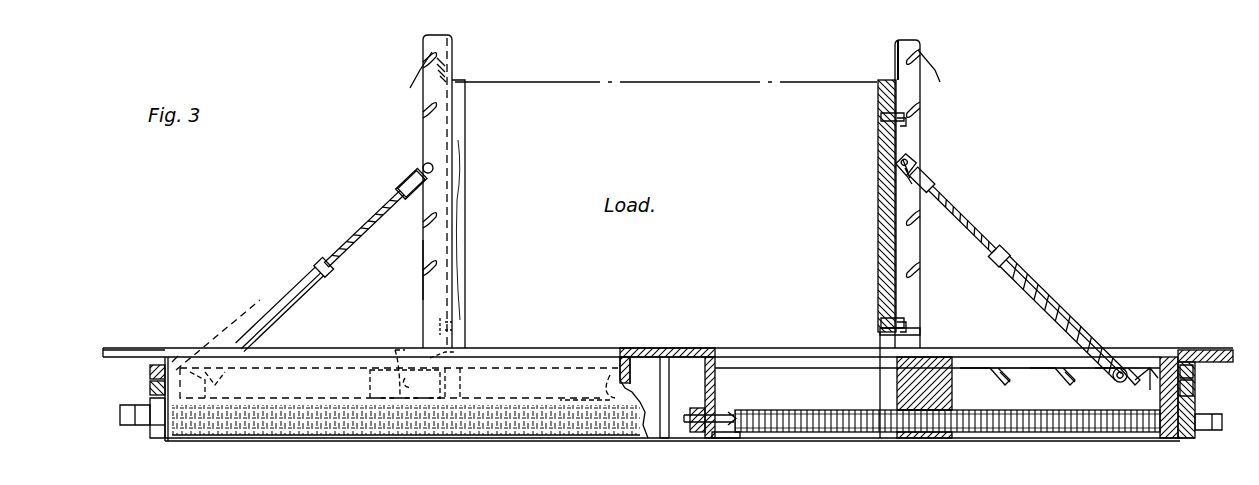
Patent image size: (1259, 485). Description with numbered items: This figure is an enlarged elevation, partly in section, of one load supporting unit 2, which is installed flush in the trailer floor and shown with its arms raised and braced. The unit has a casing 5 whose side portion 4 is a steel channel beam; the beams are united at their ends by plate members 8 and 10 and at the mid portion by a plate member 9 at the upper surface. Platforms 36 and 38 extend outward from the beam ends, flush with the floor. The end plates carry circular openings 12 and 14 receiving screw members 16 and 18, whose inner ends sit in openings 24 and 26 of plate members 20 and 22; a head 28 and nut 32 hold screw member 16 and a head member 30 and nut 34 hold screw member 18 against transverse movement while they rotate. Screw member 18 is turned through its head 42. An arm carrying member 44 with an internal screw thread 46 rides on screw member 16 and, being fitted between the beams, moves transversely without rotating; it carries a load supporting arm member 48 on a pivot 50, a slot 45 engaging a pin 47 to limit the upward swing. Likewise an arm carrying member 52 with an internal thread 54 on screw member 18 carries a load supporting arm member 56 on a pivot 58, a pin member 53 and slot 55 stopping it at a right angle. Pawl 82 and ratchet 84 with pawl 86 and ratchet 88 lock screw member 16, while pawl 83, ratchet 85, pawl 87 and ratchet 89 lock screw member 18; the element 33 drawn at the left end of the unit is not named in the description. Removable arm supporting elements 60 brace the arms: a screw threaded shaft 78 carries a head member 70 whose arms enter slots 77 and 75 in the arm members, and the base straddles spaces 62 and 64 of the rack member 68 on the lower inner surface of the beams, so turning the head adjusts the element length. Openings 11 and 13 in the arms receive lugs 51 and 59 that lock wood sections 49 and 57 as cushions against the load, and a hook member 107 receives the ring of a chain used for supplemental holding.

The load supporting unit 2 is at (1180, 348).
The side portion 4 is at (533, 349).
The casing 5 is at (393, 442).
The plate member 8 is at (207, 389).
The plate member 9 is at (674, 348).
The plate member 10 is at (1160, 396).
The opening 11 is at (455, 100).
The circular opening 12 is at (172, 438).
The opening 13 is at (880, 108).
The circular opening 14 is at (1170, 442).
The screw member 16 is at (330, 440).
The screw member 18 is at (1100, 432).
The plate member 20 is at (620, 350).
The plate member 22 is at (712, 380).
The opening 24 is at (640, 440).
The opening 26 is at (714, 415).
The head 28 is at (668, 440).
The head member 30 is at (696, 407).
The nut 32 is at (606, 400).
The bracket 33 is at (122, 445).
The nut 34 is at (724, 440).
The platform 36 is at (140, 340).
The platform 38 is at (1206, 344).
The head 42 is at (1208, 432).
The arm carrying member 44 is at (395, 352).
The slot 45 is at (395, 387).
The internal screw thread 46 is at (372, 440).
The pin 47 is at (470, 386).
The load supporting arm member 48 is at (422, 248).
The wood section 49 is at (462, 210).
The pivot 50 is at (455, 352).
The lug 51 is at (440, 112).
The arm carrying member 52 is at (935, 362).
The pin member 53 is at (880, 404).
The internal thread 54 is at (930, 441).
The slot 55 is at (1003, 385).
The load supporting arm member 56 is at (922, 250).
The wood section 57 is at (877, 246).
The pivot 58 is at (915, 350).
The lug 59 is at (908, 120).
The arm supporting element 60 is at (298, 288).
The space 62 is at (318, 380).
The space 64 is at (1040, 384).
The rack member 68 is at (1005, 368).
The head member 70 is at (120, 415).
The slot 75 is at (922, 112).
The slot 77 is at (415, 100).
The screw threaded shaft 78 is at (352, 222).
The pawl 82 is at (150, 372).
The pawl 83 is at (1194, 382).
The ratchet 84 is at (150, 390).
The ratchet 85 is at (1194, 398).
The pawl 86 is at (176, 362).
The pawl 87 is at (1166, 360).
The ratchet 88 is at (155, 440).
The ratchet 89 is at (1180, 442).
The hook member 107 is at (265, 292).